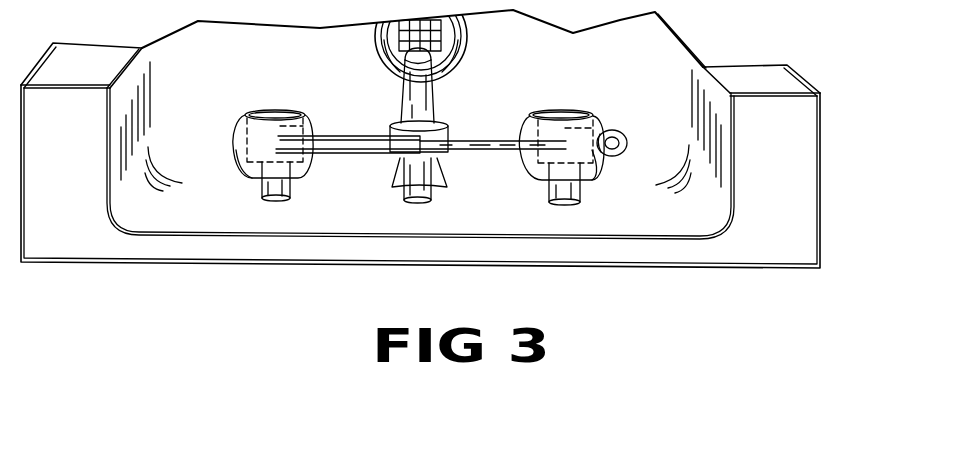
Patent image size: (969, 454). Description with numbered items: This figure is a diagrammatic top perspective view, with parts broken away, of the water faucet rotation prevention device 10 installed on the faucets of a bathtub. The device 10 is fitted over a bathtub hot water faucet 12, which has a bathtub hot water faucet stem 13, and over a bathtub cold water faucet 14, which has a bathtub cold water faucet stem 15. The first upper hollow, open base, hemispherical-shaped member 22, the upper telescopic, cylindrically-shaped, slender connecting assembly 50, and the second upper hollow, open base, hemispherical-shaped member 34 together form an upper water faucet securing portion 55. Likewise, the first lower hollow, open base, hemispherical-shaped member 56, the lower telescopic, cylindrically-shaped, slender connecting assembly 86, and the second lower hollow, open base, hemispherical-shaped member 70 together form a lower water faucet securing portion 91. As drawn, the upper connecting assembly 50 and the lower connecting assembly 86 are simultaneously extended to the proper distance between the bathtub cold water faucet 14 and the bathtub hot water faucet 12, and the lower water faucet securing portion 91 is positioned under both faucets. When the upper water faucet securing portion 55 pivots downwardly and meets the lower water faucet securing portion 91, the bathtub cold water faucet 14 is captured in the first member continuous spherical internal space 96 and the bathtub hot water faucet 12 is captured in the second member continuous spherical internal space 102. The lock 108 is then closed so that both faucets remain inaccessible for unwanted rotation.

The water faucet rotation prevention device 10 is at (226, 78).
The bathtub hot water faucet 12 is at (578, 150).
The bathtub hot water faucet stem 13 is at (578, 200).
The bathtub cold water faucet 14 is at (237, 128).
The bathtub cold water faucet stem 15 is at (263, 188).
The first upper hollow, open base, hemispherical-shaped member 22 is at (211, 161).
The first lower hollow, open base, hemispherical-shaped member 56 is at (240, 173).
The second upper hollow, open base, hemispherical-shaped member 34 is at (523, 134).
The second lower hollow, open base, hemispherical-shaped member 70 is at (538, 139).
The upper telescopic, cylindrically-shaped, slender connecting assembly 50 is at (393, 125).
The lower telescopic, cylindrically-shaped, slender connecting assembly 86 is at (393, 134).
The upper water faucet securing portion 55 is at (421, 174).
The lower water faucet securing portion 91 is at (465, 153).
The first member continuous spherical internal space 96 is at (249, 114).
The second member continuous spherical internal space 102 is at (593, 115).
The lock 108 is at (625, 128).